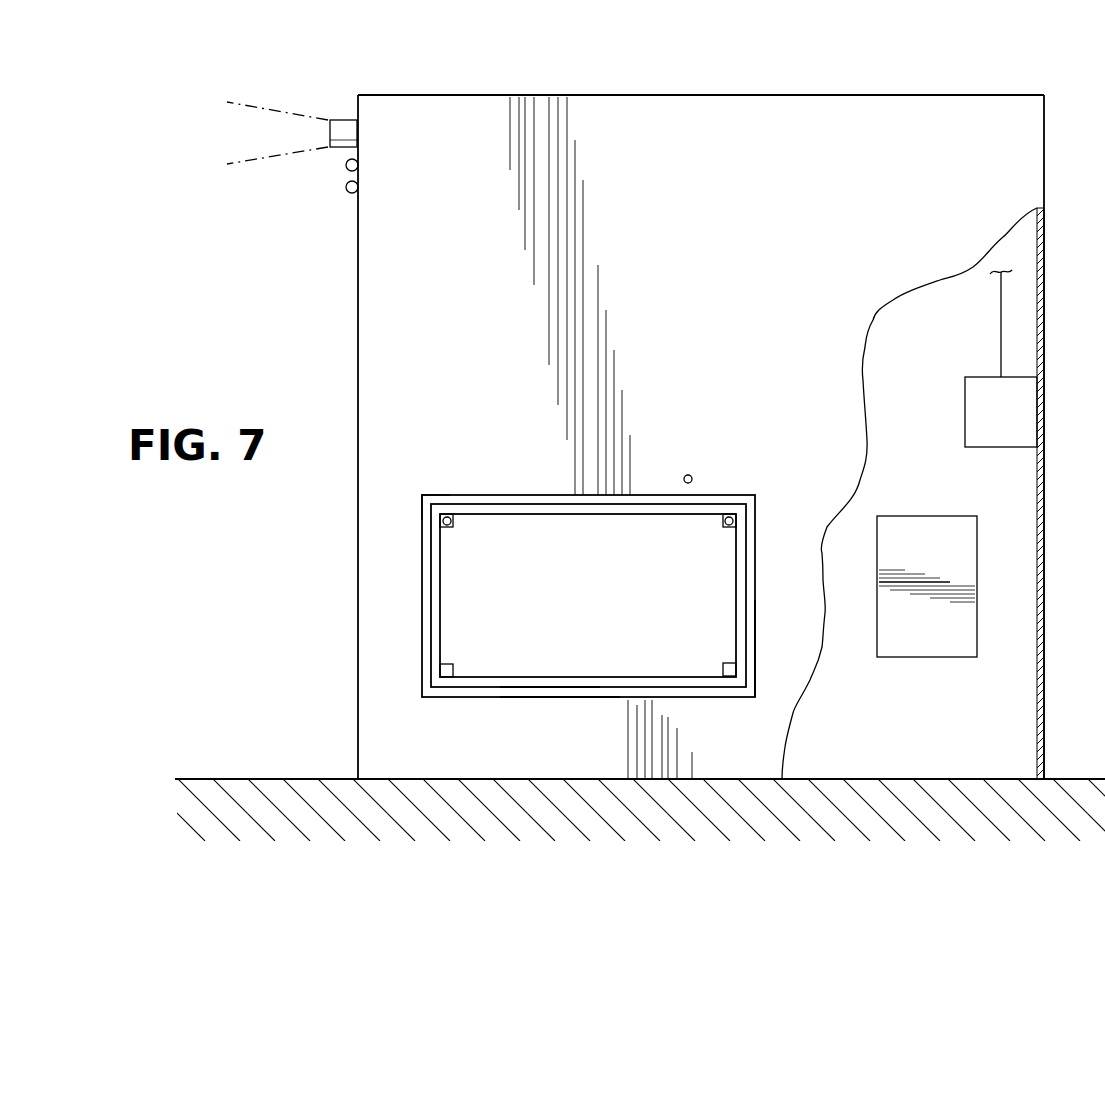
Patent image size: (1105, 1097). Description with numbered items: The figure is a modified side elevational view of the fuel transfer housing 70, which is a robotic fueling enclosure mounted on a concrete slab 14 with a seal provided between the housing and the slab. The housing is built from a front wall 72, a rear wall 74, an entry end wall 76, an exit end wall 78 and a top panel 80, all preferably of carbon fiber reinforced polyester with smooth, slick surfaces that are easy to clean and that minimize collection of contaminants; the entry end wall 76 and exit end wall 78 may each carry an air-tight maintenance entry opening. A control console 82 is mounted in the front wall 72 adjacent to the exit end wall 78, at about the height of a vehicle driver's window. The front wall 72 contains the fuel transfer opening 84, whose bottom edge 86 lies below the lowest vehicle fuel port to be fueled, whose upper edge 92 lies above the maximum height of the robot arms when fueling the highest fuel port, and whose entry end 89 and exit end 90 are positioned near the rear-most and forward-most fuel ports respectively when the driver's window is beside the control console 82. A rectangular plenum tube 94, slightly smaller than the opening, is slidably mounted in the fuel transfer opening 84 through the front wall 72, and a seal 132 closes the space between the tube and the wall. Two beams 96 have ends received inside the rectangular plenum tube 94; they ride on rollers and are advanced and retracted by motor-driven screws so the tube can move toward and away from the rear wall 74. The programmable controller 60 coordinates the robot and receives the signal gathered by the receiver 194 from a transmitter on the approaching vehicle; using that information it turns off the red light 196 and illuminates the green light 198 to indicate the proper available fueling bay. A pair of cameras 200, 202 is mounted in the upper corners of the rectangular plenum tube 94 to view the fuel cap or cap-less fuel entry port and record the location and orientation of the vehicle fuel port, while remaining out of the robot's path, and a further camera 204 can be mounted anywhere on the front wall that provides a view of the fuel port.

The concrete slab 14 is at (257, 778).
The programmable controller 60 is at (1018, 413).
The fuel transfer housing 70 is at (658, 84).
The front wall 72 is at (370, 203).
The rear wall 74 is at (1018, 253).
The entry end wall 76 is at (357, 293).
The exit end wall 78 is at (1043, 595).
The top panel 80 is at (787, 95).
The control console 82 is at (977, 548).
The fuel transfer opening 84 is at (420, 598).
The bottom edge 86 is at (560, 700).
The entry end 89 is at (423, 664).
The exit end 90 is at (757, 677).
The upper edge 92 is at (423, 497).
The rectangular plenum tube 94 is at (434, 672).
The beams 96 is at (483, 513).
The seal 132 is at (537, 690).
The receiver 194 is at (350, 121).
The red light 196 is at (346, 167).
The green light 198 is at (346, 189).
The camera 200 is at (442, 524).
The camera 202 is at (735, 525).
The camera 204 is at (690, 475).